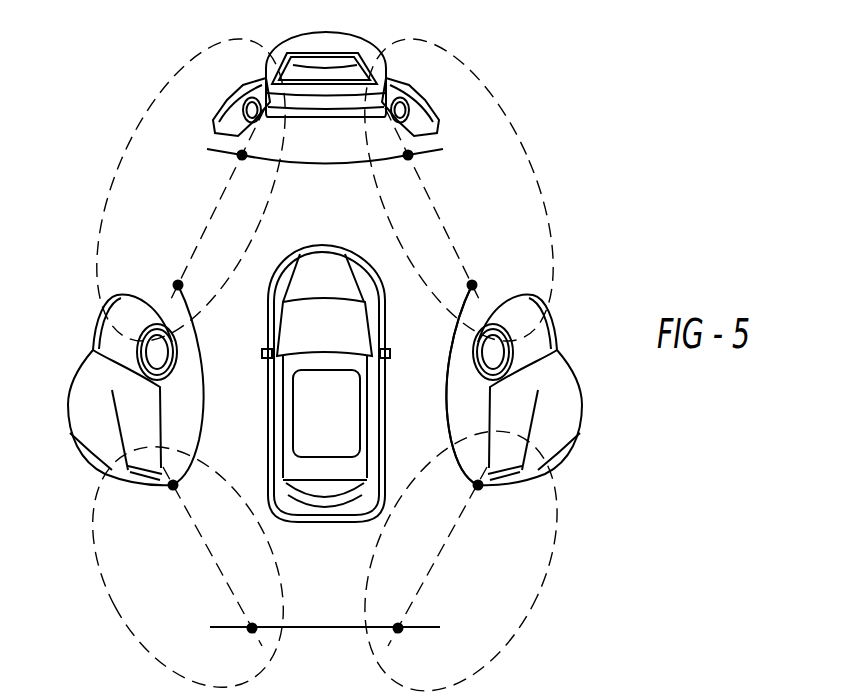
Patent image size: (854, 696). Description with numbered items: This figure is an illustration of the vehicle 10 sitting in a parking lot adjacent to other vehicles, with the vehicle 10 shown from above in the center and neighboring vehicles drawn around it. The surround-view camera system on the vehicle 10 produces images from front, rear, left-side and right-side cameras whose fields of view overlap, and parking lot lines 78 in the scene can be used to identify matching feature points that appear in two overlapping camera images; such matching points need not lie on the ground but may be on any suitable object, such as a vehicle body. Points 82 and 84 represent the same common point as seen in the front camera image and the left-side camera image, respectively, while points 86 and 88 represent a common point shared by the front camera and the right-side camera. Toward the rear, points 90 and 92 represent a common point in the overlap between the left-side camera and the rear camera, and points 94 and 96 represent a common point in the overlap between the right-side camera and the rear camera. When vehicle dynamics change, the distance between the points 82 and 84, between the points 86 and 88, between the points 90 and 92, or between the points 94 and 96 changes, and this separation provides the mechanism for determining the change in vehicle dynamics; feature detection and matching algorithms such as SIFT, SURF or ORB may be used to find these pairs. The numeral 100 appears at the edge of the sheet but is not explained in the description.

The vehicle 10 is at (323, 246).
The parking lot lines 78 is at (205, 377).
The point 82 is at (242, 155).
The point 84 is at (178, 285).
The point 86 is at (408, 155).
The point 88 is at (472, 285).
The point 90 is at (173, 485).
The point 92 is at (252, 628).
The point 94 is at (478, 485).
The point 96 is at (398, 628).
The sensor system 100 is at (686, 693).